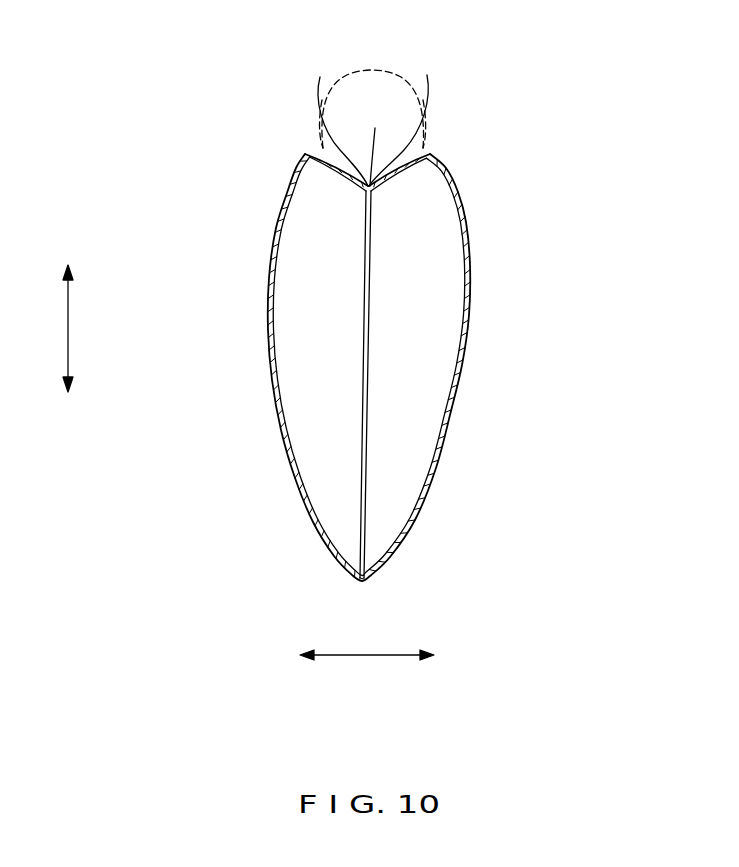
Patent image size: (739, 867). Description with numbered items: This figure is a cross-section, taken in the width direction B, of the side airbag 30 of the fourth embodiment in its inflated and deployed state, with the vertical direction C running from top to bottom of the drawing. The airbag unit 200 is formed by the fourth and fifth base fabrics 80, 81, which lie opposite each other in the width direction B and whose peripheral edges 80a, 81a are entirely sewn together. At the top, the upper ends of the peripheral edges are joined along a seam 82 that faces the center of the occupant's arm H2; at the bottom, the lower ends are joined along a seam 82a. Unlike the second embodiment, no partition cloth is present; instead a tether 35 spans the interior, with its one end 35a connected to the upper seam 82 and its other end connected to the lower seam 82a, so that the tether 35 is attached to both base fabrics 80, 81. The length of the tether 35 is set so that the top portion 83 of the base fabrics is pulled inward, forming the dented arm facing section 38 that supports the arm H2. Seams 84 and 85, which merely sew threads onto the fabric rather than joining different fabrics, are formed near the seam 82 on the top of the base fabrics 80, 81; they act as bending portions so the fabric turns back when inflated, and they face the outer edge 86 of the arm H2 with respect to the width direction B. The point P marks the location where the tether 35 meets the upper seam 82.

The side airbag 30 is at (465, 212).
The airbag unit 200 is at (471, 280).
The tether 35 is at (372, 316).
The one end of the tether 35a is at (361, 192).
The arm facing section 38 is at (352, 163).
The fourth base fabric 80 is at (467, 331).
The peripheral edge of the fourth base fabric 80a is at (418, 184).
The fifth base fabric 81 is at (269, 331).
The peripheral edge of the fifth base fabric 81a is at (342, 186).
The seam 82 is at (403, 117).
The seam 82a is at (362, 583).
The top portion 83 is at (337, 117).
The seam 84 is at (428, 152).
The seam 85 is at (311, 153).
The outer edge of the arm 86 is at (424, 128).
The crossing point P is at (378, 190).
The arm H2 is at (374, 84).
The vertical direction C is at (70, 330).
The width direction B is at (368, 658).